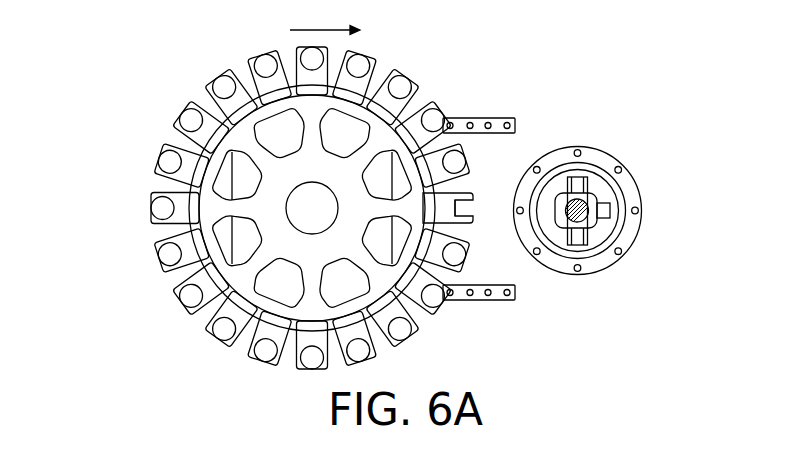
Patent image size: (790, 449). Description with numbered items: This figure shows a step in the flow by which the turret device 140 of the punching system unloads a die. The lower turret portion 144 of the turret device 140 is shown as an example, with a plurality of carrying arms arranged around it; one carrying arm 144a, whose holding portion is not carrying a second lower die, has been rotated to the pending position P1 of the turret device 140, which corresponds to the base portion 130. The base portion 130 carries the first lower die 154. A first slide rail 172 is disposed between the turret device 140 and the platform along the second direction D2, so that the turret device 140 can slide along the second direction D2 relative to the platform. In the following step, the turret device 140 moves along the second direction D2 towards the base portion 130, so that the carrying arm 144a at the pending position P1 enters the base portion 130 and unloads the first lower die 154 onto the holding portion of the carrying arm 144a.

The turret device 140 is at (199, 38).
The lower turret portion 144 is at (200, 97).
The carrying arm 144a is at (472, 197).
The first slide rail 172 is at (493, 118).
The base portion 130 is at (633, 187).
The first lower die 154 is at (590, 222).
The pending position P1 is at (467, 208).
The second direction D2 is at (325, 17).